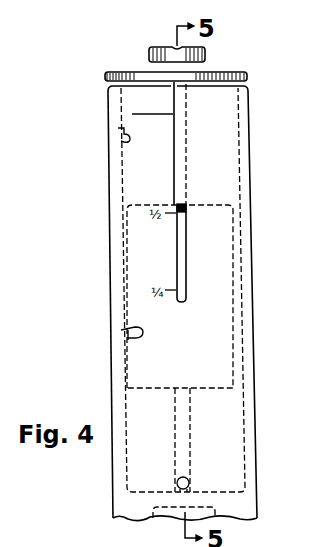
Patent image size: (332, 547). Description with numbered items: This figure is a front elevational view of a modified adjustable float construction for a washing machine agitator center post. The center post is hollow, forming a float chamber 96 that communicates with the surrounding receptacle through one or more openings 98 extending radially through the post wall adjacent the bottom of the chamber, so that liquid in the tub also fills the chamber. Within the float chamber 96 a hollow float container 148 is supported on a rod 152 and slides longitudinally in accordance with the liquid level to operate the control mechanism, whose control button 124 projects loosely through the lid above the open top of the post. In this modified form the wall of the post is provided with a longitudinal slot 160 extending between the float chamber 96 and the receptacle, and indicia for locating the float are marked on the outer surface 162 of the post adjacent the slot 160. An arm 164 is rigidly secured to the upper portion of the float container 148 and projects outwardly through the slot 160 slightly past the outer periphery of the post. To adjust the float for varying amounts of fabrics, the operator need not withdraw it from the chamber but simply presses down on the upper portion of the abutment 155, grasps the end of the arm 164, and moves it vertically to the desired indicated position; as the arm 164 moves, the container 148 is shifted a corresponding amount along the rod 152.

The control button 124 is at (149, 58).
The abutment 155 is at (105, 77).
The float chamber 96 is at (118, 128).
The longitudinal slot 160 is at (108, 163).
The outer surface 162 is at (146, 251).
The hollow float container 148 is at (121, 330).
The arm 164 is at (184, 208).
The rod 152 is at (190, 424).
The openings 98 is at (190, 482).